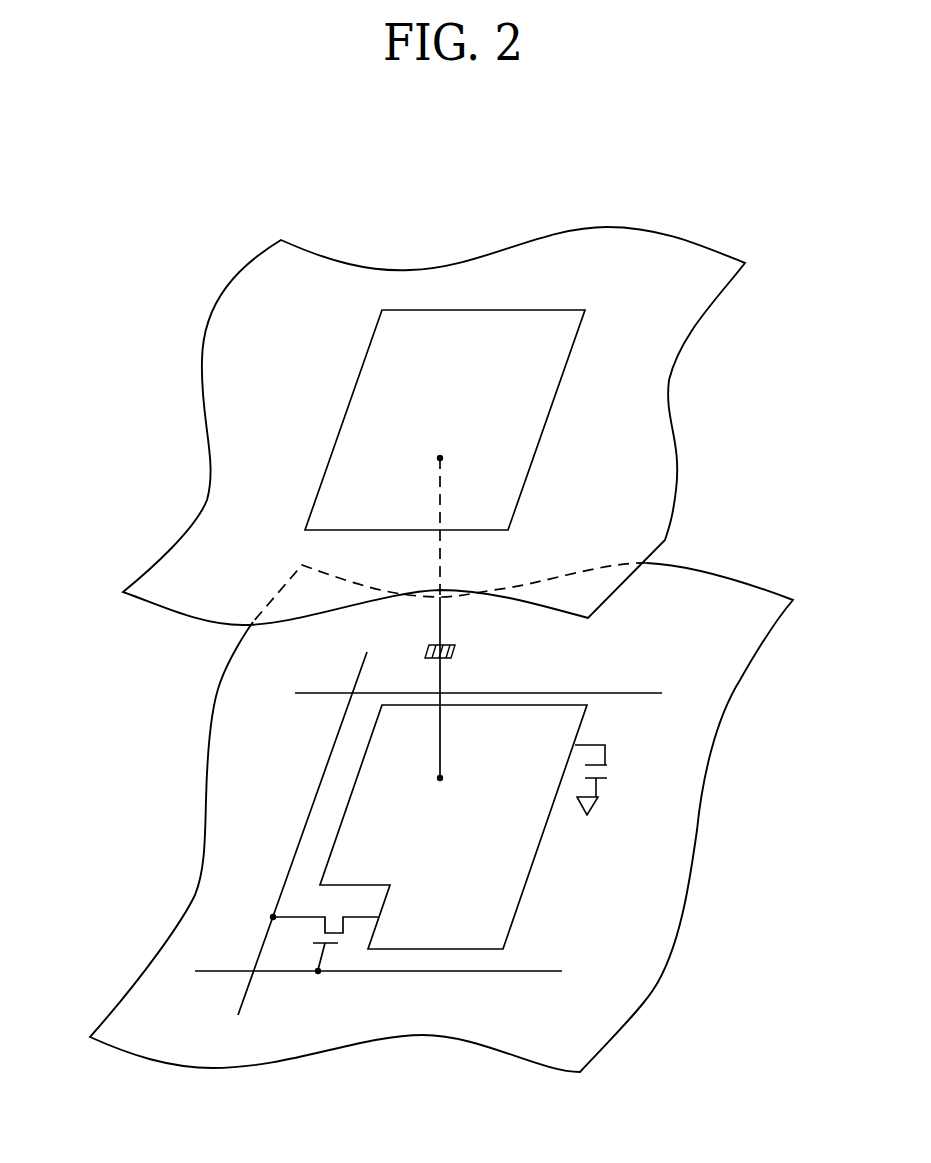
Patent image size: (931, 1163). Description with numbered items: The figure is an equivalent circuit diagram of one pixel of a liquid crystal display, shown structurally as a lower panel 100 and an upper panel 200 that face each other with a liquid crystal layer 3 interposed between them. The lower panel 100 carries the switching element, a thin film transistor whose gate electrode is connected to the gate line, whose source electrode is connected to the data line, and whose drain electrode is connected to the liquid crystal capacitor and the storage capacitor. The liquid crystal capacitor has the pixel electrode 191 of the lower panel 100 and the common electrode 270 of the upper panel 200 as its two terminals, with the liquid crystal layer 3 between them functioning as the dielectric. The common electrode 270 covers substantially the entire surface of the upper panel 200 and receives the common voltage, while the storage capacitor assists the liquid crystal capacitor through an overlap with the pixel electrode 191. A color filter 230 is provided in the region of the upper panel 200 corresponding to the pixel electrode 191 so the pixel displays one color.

The liquid crystal layer 3 is at (120, 710).
The lower panel 100 is at (706, 793).
The pixel electrode 191 is at (528, 880).
The upper panel 200 is at (459, 426).
The color filter 230 is at (527, 487).
The common electrode 270 is at (680, 455).